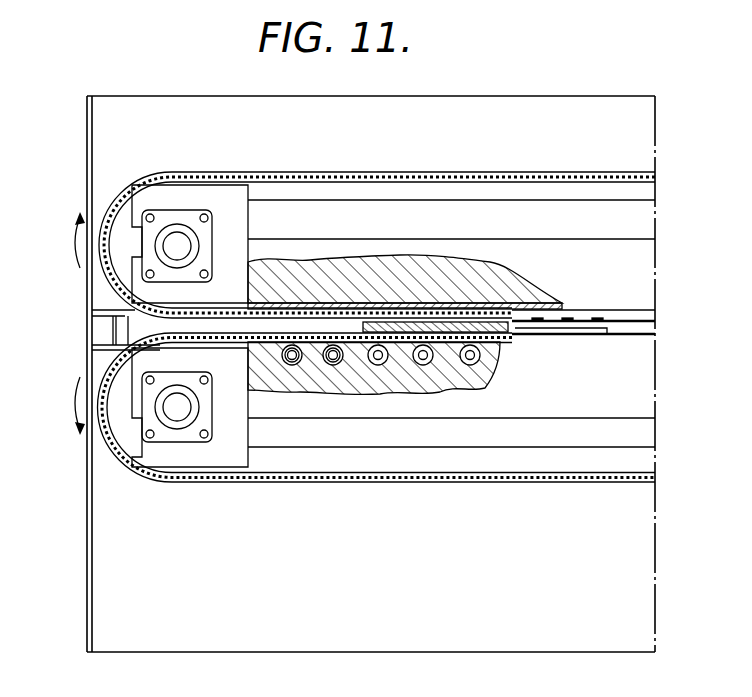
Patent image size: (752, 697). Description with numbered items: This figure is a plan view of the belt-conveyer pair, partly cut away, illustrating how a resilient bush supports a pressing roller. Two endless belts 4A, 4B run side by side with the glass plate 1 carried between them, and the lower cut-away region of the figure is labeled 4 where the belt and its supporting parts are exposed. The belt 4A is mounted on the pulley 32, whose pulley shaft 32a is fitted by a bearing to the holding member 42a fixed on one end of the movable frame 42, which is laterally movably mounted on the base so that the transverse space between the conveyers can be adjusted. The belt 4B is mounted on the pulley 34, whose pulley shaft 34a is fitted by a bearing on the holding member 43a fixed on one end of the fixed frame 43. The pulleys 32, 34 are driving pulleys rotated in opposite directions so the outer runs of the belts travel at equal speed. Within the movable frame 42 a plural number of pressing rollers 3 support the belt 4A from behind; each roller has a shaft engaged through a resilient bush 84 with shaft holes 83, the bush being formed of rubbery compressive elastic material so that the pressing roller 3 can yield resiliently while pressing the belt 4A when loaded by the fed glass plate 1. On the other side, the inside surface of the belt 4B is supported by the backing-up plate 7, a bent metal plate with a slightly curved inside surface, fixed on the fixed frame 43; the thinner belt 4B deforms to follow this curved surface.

The glass plate 1 is at (503, 327).
The pressing roller 3 is at (305, 362).
The lower hatched block 4 is at (403, 372).
The endless belt 4A is at (500, 335).
The endless belt 4B is at (362, 312).
The backing-up plate 7 is at (275, 300).
The pulley 32 is at (177, 182).
The pulley shaft 32a is at (170, 400).
The pulley 34 is at (118, 220).
The pulley shaft 34a is at (165, 247).
The movable frame 42 is at (630, 382).
The holding member 42a is at (167, 452).
The fixed frame 43 is at (630, 275).
The holding member 43a is at (145, 195).
The shaft hole 83 is at (333, 366).
The resilient bush 84 is at (292, 366).